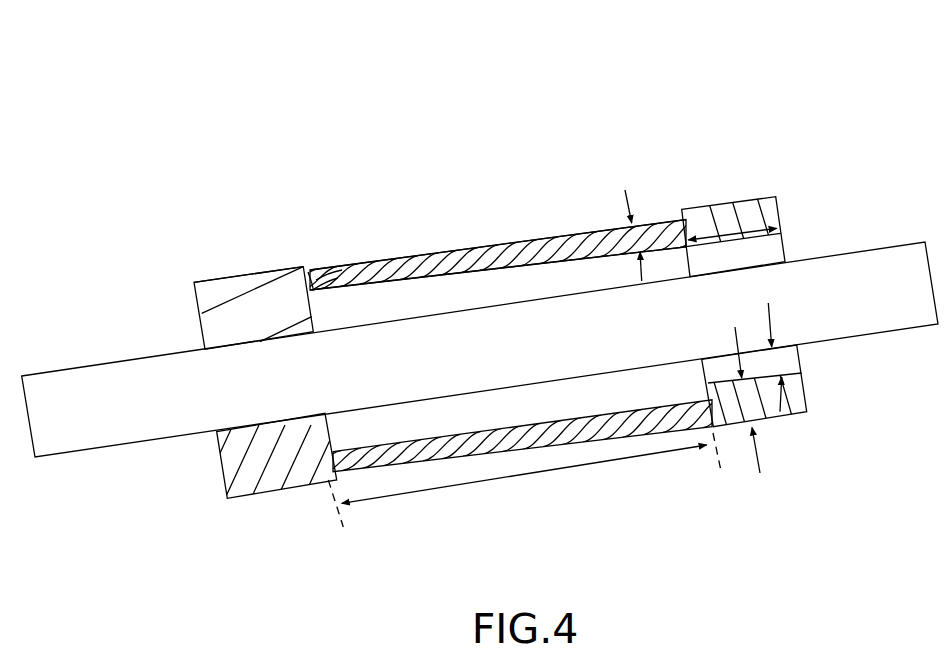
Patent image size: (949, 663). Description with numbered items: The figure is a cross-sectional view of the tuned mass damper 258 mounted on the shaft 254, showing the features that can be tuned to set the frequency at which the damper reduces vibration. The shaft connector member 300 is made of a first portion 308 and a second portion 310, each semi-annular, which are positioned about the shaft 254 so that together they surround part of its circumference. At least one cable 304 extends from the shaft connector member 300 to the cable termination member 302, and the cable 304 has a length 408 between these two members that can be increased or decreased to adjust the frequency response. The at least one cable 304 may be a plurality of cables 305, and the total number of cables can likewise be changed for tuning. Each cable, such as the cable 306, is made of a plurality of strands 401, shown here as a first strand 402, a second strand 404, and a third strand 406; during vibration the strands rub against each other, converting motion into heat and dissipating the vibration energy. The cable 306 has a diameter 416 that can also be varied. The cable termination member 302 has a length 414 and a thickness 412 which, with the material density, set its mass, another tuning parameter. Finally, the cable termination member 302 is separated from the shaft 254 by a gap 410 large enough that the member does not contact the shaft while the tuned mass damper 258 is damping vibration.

The shaft 254 is at (117, 362).
The tuned mass damper 258 is at (270, 63).
The shaft connector member 300 is at (198, 282).
The cable termination member 302 is at (742, 215).
The cable 304 is at (400, 266).
The plurality of cables 305 is at (377, 458).
The cable 306 is at (465, 251).
The first portion 308 is at (273, 266).
The second portion 310 is at (272, 493).
The plurality of strands 401 is at (357, 279).
The first strand 402 is at (312, 272).
The second strand 404 is at (325, 283).
The third strand 406 is at (337, 275).
The length 408 is at (533, 477).
The gap 410 is at (793, 413).
The thickness 412 is at (760, 473).
The length 414 is at (720, 233).
The diameter 416 is at (630, 200).